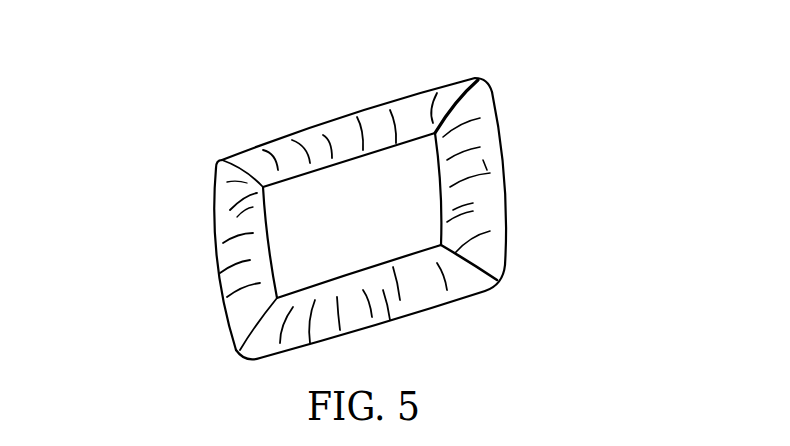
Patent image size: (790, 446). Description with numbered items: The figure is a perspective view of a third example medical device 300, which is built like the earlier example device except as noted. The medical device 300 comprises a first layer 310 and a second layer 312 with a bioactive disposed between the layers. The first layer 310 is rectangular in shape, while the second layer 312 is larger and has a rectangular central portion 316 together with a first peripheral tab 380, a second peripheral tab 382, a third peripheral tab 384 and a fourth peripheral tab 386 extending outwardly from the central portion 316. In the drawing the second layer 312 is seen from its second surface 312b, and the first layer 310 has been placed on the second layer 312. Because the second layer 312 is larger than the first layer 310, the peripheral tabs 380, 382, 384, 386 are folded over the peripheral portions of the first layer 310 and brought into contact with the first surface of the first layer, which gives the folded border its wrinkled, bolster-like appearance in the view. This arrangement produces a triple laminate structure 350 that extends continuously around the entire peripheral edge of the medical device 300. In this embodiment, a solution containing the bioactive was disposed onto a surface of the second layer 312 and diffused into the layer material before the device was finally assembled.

The medical device 300 is at (183, 160).
The first layer 310 is at (380, 167).
The second layer 312 is at (500, 192).
The second surface of the second layer 312b is at (220, 238).
The central portion 316 is at (421, 200).
The triple laminate structure 350 is at (525, 265).
The first peripheral tab 380 is at (316, 147).
The second peripheral tab 382 is at (503, 147).
The third peripheral tab 384 is at (376, 295).
The fourth peripheral tab 386 is at (242, 283).